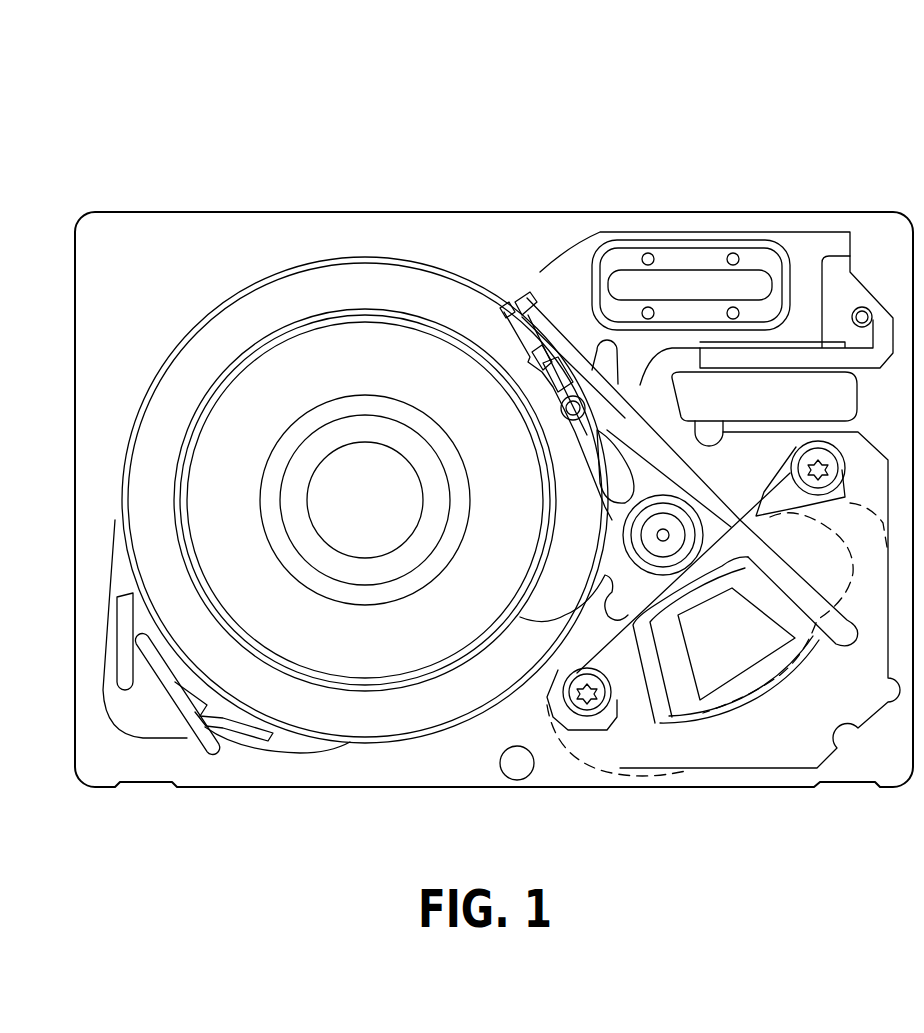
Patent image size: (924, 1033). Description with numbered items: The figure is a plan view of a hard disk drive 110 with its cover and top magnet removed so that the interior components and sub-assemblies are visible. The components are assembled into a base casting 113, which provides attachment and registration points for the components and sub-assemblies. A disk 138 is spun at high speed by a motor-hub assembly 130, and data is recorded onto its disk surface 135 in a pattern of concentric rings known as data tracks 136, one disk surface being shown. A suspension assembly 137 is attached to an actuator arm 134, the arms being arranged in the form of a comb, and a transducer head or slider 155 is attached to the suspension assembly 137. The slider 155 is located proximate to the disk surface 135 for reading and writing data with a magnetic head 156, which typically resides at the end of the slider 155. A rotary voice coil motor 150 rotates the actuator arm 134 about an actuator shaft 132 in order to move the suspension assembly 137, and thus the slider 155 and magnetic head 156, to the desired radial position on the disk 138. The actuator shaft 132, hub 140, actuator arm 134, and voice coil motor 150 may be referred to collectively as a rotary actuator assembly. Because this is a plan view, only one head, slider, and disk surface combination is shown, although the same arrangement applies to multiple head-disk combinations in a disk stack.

The hard disk drive 110 is at (156, 120).
The base casting 113 is at (100, 452).
The motor-hub assembly 130 is at (367, 493).
The actuator shaft 132 is at (663, 541).
The actuator arm 134 is at (590, 432).
The disk surface 135 is at (287, 307).
The data tracks 136 is at (183, 563).
The suspension assembly 137 is at (547, 270).
The disk 138 is at (223, 303).
The hub 140 is at (622, 587).
The rotary voice coil motor 150 is at (740, 727).
The slider 155 is at (508, 305).
The magnetic head 156 is at (497, 290).